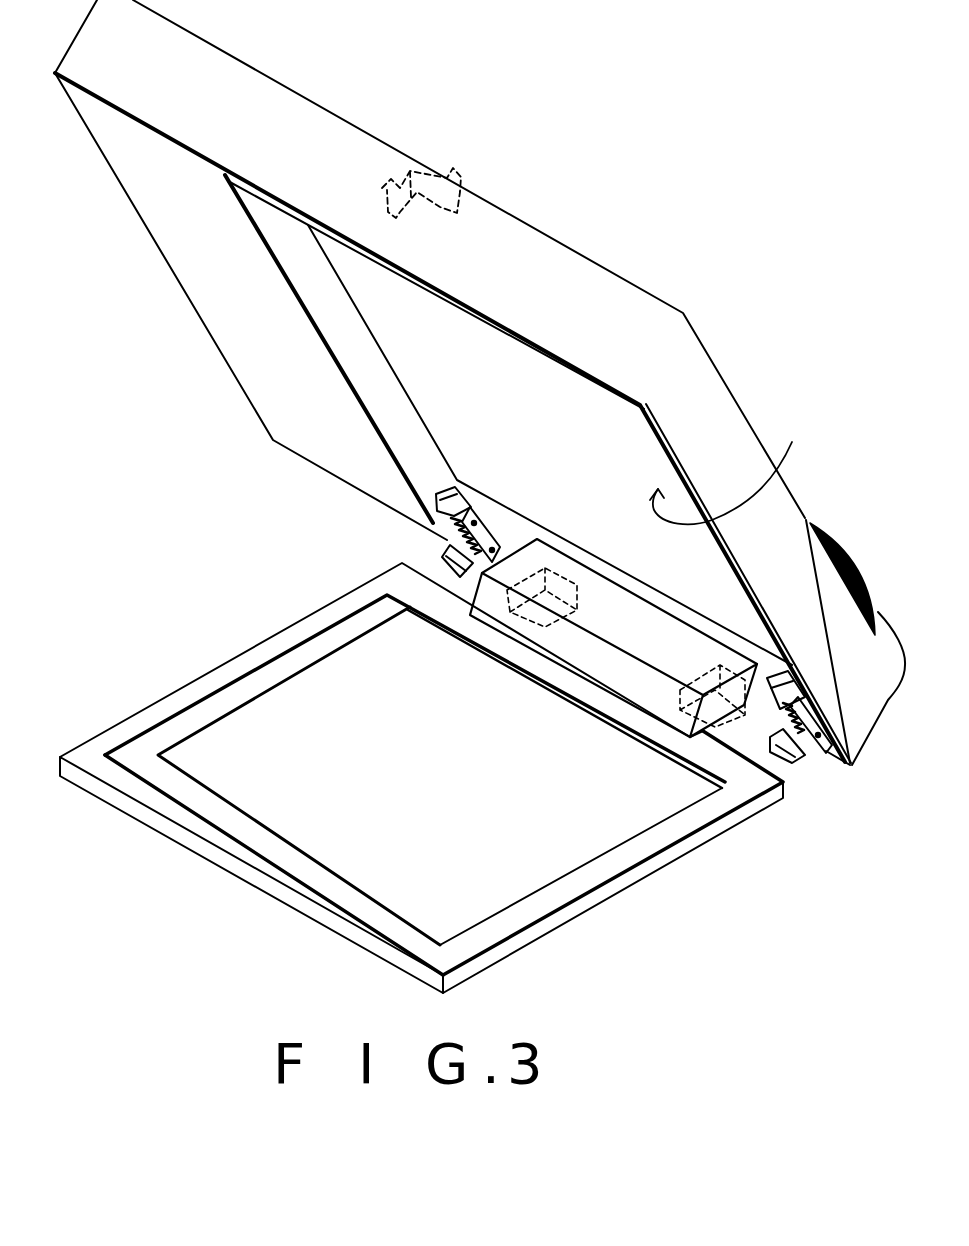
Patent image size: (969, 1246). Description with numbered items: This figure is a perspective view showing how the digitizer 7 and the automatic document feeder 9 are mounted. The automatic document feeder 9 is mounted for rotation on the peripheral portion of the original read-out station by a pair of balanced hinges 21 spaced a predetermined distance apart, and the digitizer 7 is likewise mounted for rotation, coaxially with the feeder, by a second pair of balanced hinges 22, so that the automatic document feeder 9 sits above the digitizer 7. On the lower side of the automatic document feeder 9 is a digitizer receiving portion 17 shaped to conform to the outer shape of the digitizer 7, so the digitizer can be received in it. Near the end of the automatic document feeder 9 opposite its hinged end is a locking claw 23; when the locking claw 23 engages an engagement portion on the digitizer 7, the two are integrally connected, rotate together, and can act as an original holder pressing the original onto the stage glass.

The digitizer 7 is at (630, 883).
The automatic document feeder 9 is at (725, 393).
The digitizer receiving portion 17 is at (735, 464).
The balanced hinges 21 is at (450, 557).
The balanced hinges 22 is at (507, 600).
The locking claw 23 is at (450, 177).